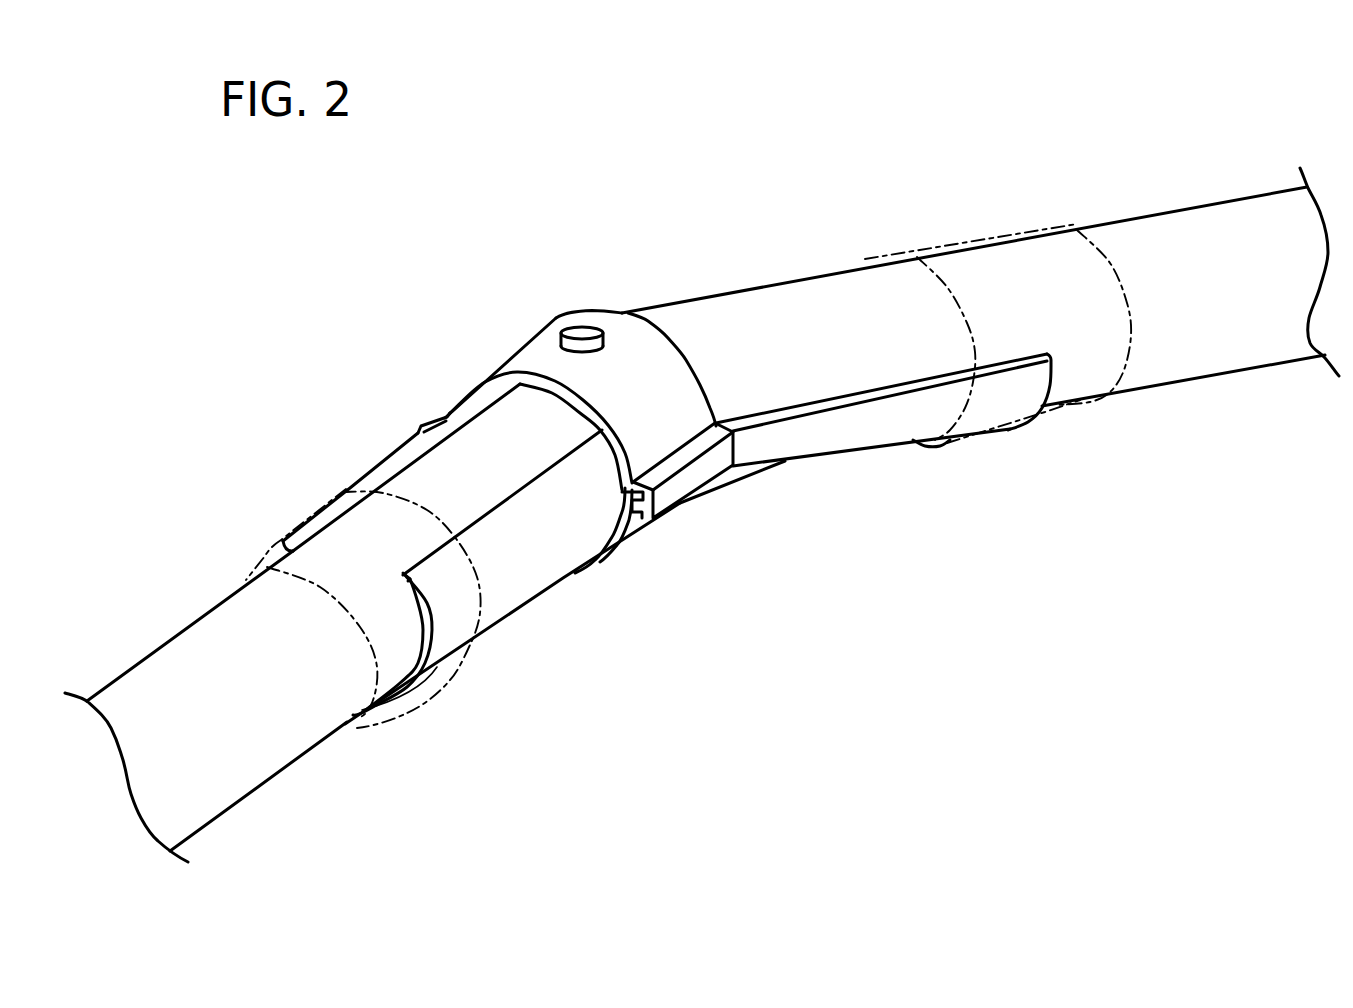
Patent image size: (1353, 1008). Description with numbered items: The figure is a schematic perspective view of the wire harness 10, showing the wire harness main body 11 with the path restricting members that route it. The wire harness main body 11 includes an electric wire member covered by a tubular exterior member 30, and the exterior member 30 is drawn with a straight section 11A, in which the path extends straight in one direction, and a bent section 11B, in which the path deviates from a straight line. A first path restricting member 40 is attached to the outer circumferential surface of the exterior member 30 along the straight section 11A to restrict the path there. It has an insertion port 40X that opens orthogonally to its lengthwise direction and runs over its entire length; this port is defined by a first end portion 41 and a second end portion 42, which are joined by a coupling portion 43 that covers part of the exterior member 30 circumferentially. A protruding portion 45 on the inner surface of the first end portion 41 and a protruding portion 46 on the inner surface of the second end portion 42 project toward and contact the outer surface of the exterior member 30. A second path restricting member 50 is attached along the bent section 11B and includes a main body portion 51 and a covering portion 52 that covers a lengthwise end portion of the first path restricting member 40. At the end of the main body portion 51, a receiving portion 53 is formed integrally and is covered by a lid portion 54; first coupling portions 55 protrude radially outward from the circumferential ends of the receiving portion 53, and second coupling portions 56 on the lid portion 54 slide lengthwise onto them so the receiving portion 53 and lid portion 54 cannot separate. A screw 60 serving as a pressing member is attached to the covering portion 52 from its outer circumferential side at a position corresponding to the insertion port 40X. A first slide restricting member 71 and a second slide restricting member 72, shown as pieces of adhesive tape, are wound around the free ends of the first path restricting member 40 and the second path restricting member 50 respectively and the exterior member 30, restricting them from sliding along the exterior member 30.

The wire harness 10 is at (1258, 107).
The wire harness main body 11 is at (221, 706).
The straight section 11A is at (427, 470).
The bent section 11B is at (772, 297).
The exterior member 30 is at (183, 631).
The first path restricting member 40 is at (551, 594).
The insertion port 40X is at (492, 502).
The first end portion 41 is at (378, 478).
The second end portion 42 is at (408, 567).
The coupling portion 43 is at (487, 618).
The protruding portion 45 is at (290, 559).
The protruding portion 46 is at (397, 583).
The second path restricting member 50 is at (871, 451).
The main body portion 51 is at (838, 410).
The covering portion 52 is at (528, 356).
The receiving portion 53 is at (638, 543).
The lid portion 54 is at (634, 337).
The first coupling portions 55 is at (646, 500).
The second coupling portions 56 is at (712, 463).
The screw 60 is at (583, 330).
The first slide restricting member 71 is at (314, 508).
The second slide restricting member 72 is at (1040, 230).